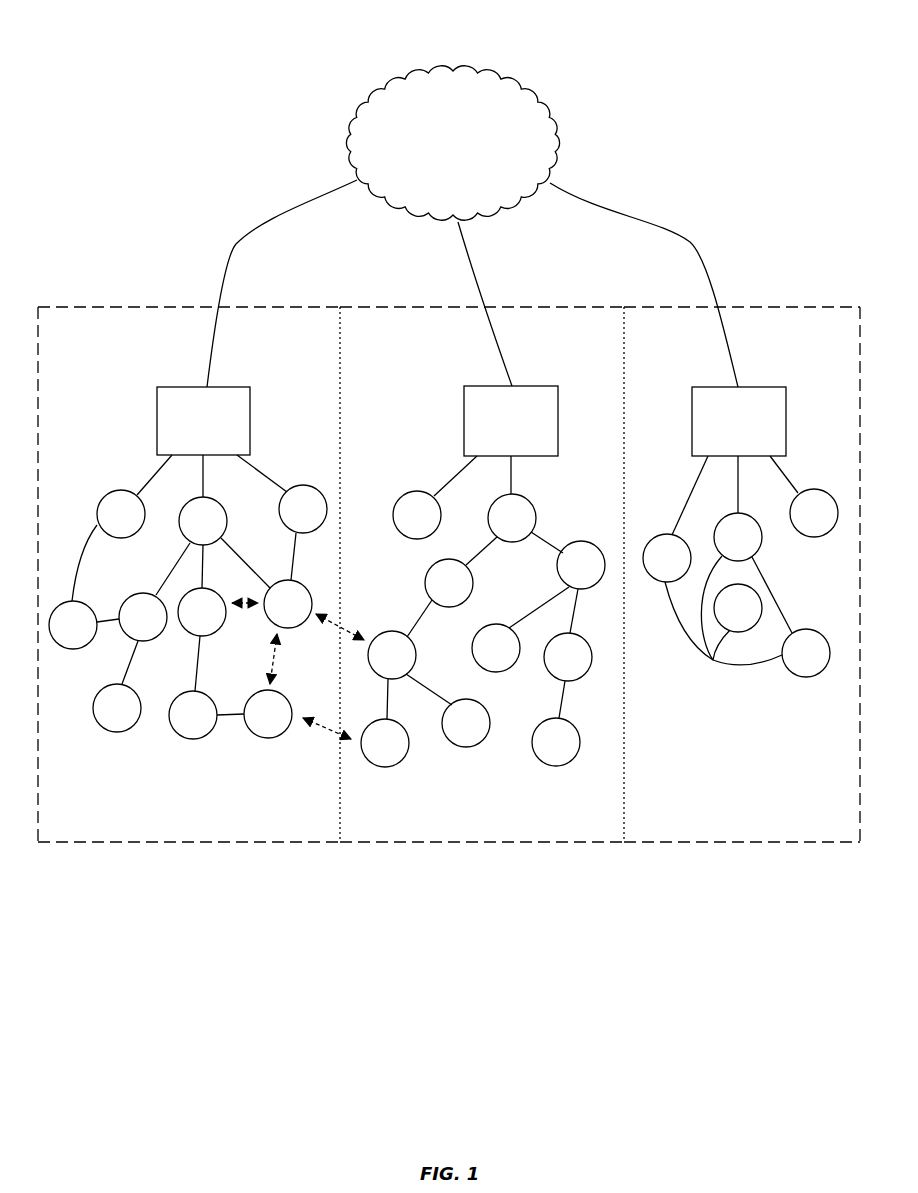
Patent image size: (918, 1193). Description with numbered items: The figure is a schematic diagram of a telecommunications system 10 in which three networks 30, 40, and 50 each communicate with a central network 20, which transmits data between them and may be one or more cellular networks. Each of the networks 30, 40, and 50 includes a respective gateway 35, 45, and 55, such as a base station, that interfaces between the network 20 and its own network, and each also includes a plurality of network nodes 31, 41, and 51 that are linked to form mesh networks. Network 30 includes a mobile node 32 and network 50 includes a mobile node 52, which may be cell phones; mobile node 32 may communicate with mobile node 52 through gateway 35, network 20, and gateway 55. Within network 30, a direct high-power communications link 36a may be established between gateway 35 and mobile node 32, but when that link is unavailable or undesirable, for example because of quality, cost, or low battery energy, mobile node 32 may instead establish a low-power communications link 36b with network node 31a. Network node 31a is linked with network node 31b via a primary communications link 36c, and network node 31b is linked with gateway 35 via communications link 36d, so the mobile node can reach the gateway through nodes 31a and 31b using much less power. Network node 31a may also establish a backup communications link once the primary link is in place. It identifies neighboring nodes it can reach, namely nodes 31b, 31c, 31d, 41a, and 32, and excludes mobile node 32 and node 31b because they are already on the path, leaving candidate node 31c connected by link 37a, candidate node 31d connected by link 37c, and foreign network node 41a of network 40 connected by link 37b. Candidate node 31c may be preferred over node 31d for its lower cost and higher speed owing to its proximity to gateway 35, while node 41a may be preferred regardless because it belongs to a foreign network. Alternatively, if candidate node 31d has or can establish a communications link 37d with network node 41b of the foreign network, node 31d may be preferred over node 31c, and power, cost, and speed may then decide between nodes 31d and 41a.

The telecommunications system 10 is at (716, 64).
The network 20 is at (467, 156).
The network 30 is at (92, 345).
The network nodes 31 is at (127, 596).
The network node 31a is at (312, 600).
The network node 31b is at (228, 522).
The candidate node 31c is at (214, 632).
The candidate node 31d is at (268, 738).
The mobile node 32 is at (304, 485).
The gateway 35 is at (157, 410).
The direct communications link 36a is at (255, 476).
The low-power communications link 36b is at (294, 572).
The communications link 36c is at (246, 563).
The communications link 36d is at (205, 482).
The link 37a is at (253, 618).
The link 37b is at (333, 627).
The link 37c is at (275, 666).
The communications link 37d is at (325, 728).
The network 40 is at (586, 345).
The network nodes 41 is at (488, 514).
The network node 41a is at (379, 677).
The network node 41b is at (404, 762).
The gateway 45 is at (464, 410).
The network 50 is at (826, 345).
The network nodes 51 is at (736, 600).
The mobile node 52 is at (818, 537).
The gateway 55 is at (692, 410).